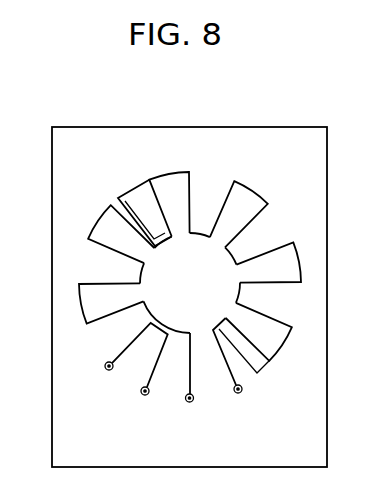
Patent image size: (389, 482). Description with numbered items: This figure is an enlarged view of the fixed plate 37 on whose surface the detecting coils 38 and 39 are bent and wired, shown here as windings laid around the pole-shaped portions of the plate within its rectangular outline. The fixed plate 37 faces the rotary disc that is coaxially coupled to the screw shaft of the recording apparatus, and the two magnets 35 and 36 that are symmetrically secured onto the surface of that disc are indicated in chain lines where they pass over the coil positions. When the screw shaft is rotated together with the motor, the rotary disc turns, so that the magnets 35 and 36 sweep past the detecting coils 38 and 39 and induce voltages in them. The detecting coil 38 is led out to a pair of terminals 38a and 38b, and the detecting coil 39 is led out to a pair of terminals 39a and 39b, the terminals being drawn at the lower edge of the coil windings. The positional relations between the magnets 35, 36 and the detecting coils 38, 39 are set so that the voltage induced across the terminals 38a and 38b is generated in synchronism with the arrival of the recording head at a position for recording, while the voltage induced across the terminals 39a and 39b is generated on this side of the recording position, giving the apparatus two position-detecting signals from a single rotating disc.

The magnet 35 is at (226, 330).
The magnet 36 is at (165, 231).
The fixed plate 37 is at (320, 163).
The detecting coil 38 is at (294, 247).
The terminal 38a is at (238, 393).
The terminal 38b is at (189, 402).
The detecting coil 39 is at (128, 347).
The terminal 39a is at (144, 395).
The terminal 39b is at (107, 370).